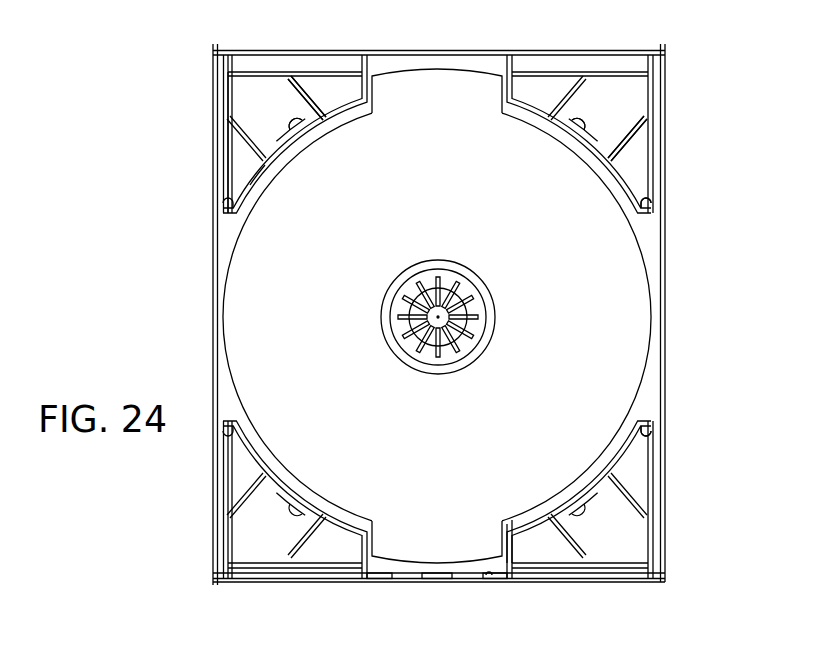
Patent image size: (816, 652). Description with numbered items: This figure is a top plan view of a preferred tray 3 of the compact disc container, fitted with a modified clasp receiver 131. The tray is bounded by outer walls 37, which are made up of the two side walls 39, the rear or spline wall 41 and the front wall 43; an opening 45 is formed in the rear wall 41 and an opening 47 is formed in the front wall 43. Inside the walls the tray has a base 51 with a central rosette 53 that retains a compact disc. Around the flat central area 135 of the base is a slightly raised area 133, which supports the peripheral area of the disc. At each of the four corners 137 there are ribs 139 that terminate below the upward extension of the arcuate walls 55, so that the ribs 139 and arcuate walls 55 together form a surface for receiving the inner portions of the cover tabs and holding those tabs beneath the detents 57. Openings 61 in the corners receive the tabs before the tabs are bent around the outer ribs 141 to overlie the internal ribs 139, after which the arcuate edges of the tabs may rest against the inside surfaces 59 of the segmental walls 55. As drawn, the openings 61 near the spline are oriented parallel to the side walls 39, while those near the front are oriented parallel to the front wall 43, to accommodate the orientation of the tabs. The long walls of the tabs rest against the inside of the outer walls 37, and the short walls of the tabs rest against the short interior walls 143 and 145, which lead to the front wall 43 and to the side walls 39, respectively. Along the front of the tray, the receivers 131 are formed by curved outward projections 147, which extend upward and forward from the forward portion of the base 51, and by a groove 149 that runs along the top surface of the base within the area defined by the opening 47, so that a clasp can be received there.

The tray 3 is at (713, 378).
The outer walls 37 is at (707, 222).
The side walls 39 is at (667, 113).
The rear wall 41 is at (595, 49).
The front wall 43 is at (632, 575).
The opening 45 is at (370, 50).
The opening 47 is at (497, 585).
The base 51 is at (620, 287).
The central rosette 53 is at (455, 275).
The arcuate walls 55 is at (252, 205).
The detents 57 is at (310, 128).
The inside surfaces 59 is at (560, 118).
The openings 61 is at (225, 142).
The clasp receiver 131 is at (461, 594).
The slightly raised area 133 is at (277, 168).
The flat central area 135 is at (320, 321).
The corners 137 is at (248, 92).
The ribs 139 is at (333, 78).
The outer ribs 141 is at (632, 140).
The short interior wall 143 is at (516, 545).
The short interior wall 145 is at (653, 437).
The curved outward projections 147 is at (407, 580).
The groove 149 is at (497, 587).